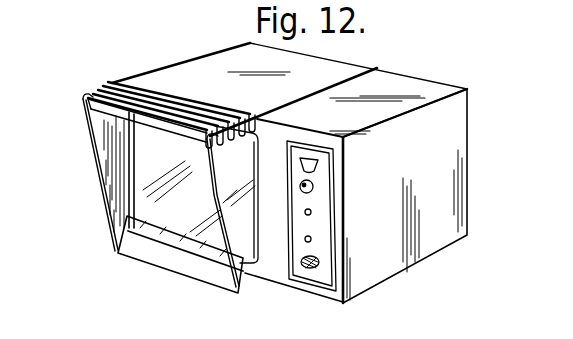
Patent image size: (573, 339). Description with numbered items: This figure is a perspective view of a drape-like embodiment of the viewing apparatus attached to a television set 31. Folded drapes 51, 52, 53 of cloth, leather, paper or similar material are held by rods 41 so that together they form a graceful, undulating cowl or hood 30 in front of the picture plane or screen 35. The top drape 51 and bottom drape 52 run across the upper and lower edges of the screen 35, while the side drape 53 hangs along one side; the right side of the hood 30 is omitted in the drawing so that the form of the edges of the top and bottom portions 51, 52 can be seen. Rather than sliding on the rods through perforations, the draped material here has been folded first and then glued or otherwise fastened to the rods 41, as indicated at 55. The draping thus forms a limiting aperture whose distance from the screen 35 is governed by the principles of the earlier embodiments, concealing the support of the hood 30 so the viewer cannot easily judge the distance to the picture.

The cowl or hood 30 is at (107, 113).
The television set 31 is at (451, 147).
The picture plane or screen 35 is at (197, 206).
The rods 41 is at (213, 52).
The top drape 51 is at (193, 110).
The bottom drape 52 is at (152, 257).
The side drape 53 is at (100, 187).
The fastening of drape to rods 55 is at (254, 120).